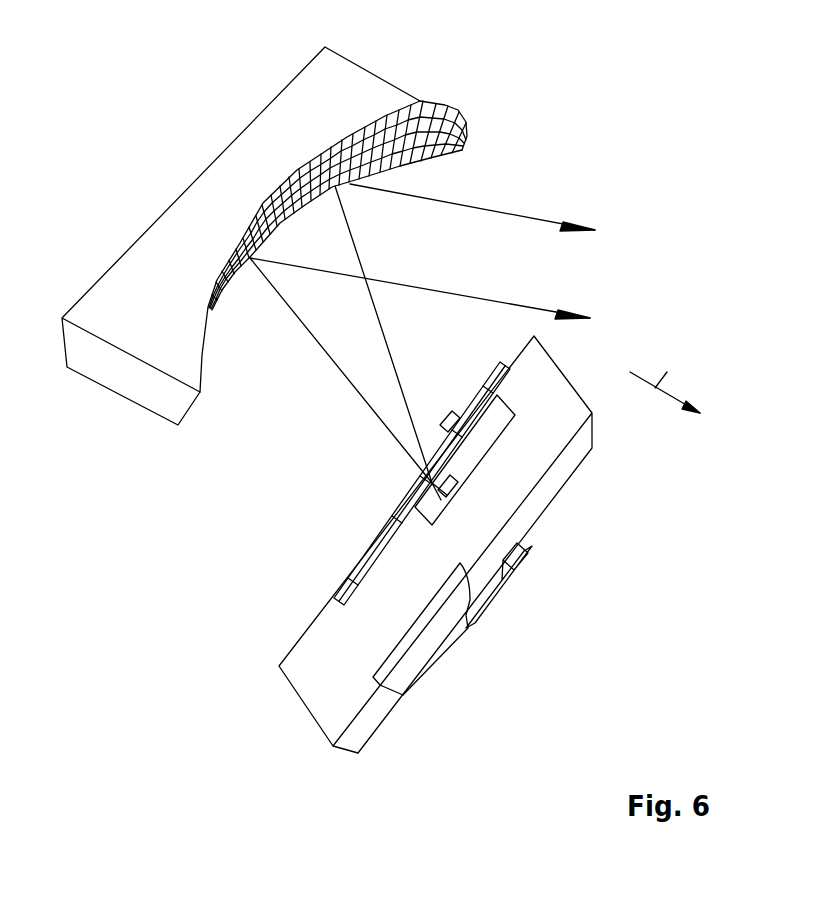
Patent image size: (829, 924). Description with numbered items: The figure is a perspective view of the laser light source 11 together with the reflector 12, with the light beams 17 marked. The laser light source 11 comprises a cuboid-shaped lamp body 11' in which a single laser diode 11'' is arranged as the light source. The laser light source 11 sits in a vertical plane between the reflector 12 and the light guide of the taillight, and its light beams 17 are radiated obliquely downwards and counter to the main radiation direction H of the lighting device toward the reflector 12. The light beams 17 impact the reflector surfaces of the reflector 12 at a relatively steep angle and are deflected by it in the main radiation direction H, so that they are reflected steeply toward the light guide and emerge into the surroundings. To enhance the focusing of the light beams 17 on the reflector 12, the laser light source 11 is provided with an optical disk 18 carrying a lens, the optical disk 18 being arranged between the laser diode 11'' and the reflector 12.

The reflector 12 is at (458, 110).
The light beams 17 is at (503, 300).
The laser light source 11 is at (534, 545).
The lamp body 11' is at (476, 544).
The laser diode 11'' is at (438, 395).
The optical disk 18 is at (376, 512).
The main radiation direction H is at (665, 376).